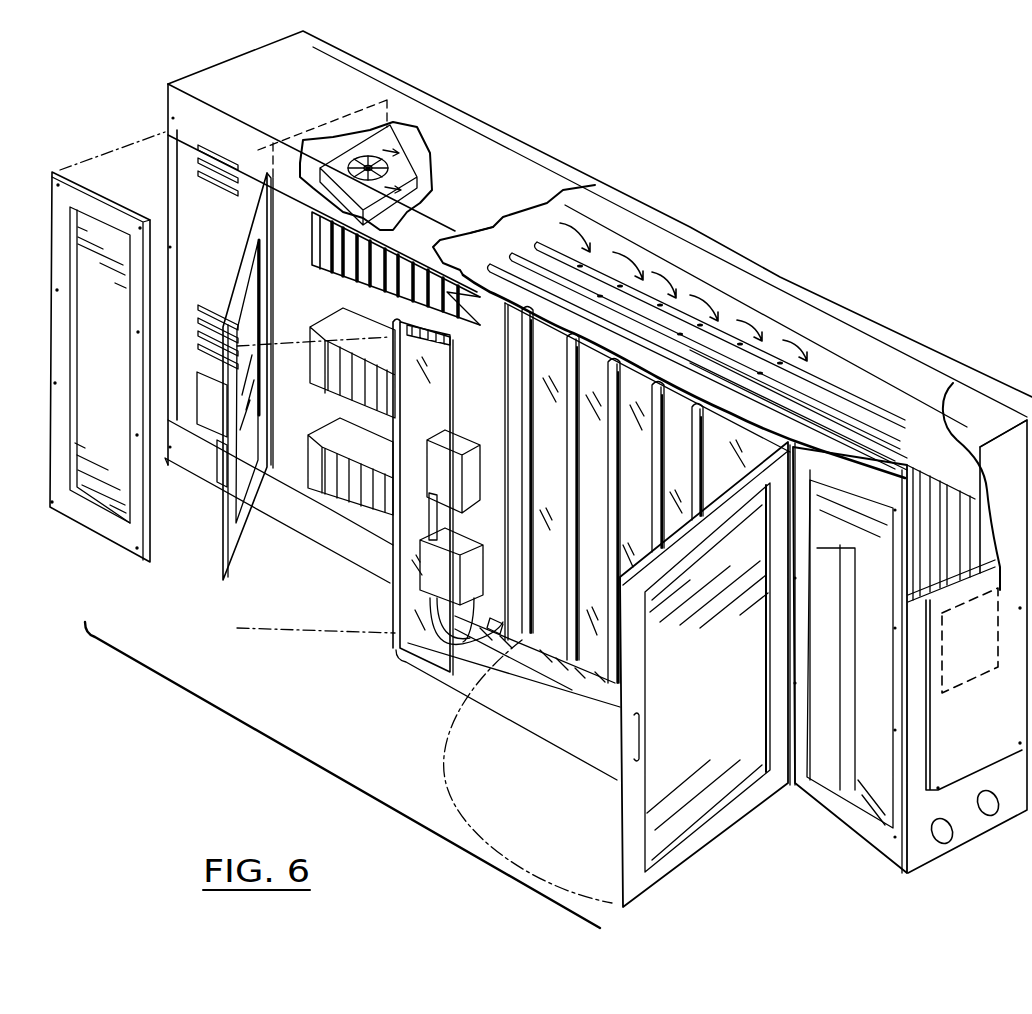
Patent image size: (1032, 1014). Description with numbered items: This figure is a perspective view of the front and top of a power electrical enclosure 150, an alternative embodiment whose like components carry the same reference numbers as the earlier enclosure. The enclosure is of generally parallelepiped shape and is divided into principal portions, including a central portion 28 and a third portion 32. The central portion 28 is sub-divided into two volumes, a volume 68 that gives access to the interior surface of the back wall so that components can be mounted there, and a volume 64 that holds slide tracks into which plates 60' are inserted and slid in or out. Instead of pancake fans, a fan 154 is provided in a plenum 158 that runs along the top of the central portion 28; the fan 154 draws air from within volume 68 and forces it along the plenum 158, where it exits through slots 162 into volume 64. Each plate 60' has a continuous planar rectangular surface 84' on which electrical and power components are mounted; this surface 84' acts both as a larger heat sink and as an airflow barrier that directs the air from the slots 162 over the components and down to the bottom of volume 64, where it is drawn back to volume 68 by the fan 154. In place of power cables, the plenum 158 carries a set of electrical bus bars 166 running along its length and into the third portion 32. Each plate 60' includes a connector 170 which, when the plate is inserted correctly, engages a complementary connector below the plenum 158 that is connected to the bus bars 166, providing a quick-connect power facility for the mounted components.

The enclosure 150 is at (860, 286).
The fan 154 is at (402, 166).
The plenum 158 is at (499, 235).
The slots 162 is at (647, 283).
The electrical bus bars 166 is at (915, 416).
The plate 60' is at (396, 268).
The connector 170 is at (403, 323).
The planar rectangular surface 84' is at (448, 497).
The volume 68 is at (263, 537).
The volume 64 is at (505, 722).
The third portion 32 is at (890, 892).
The central portion 28 is at (331, 770).